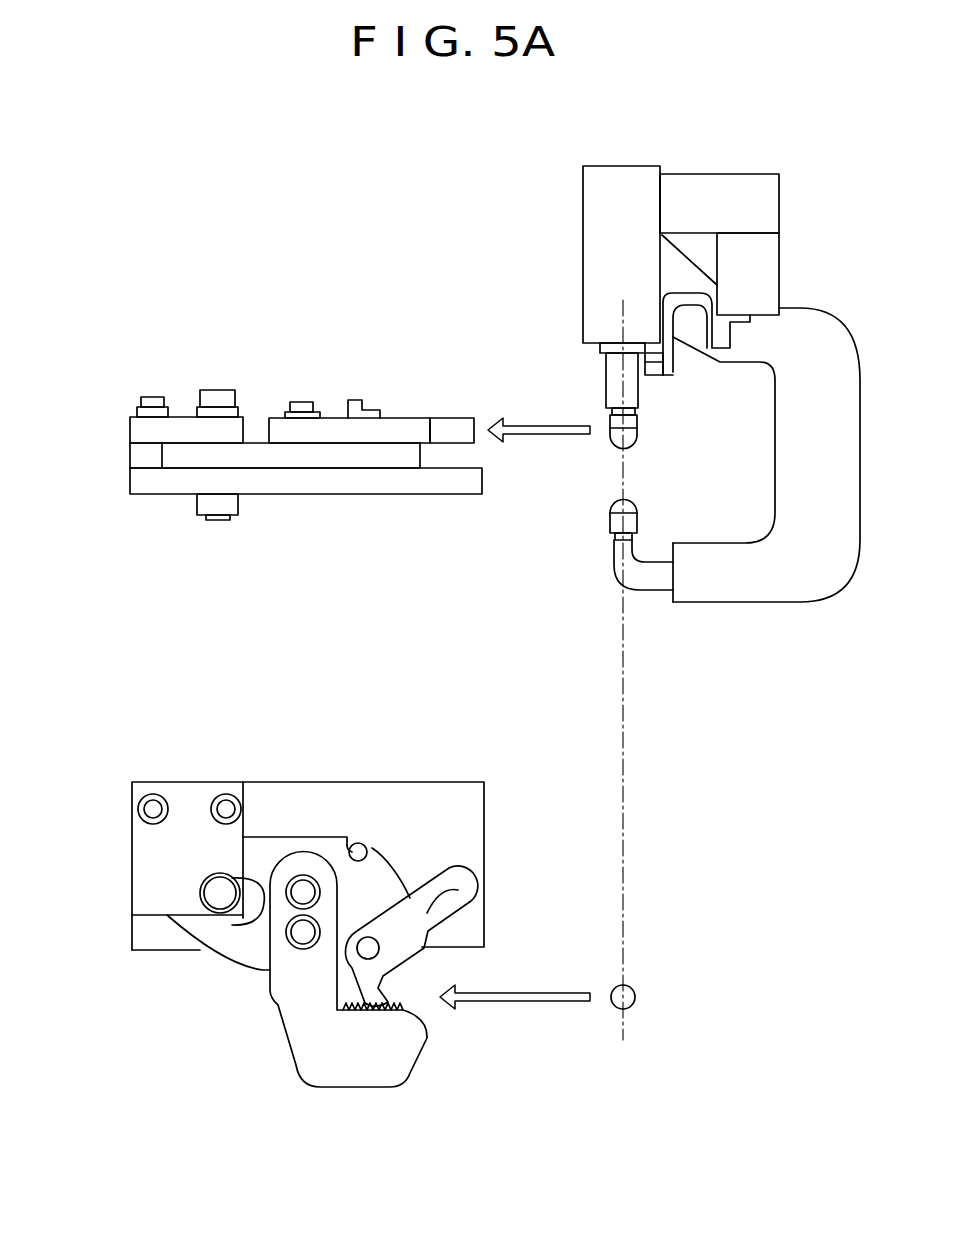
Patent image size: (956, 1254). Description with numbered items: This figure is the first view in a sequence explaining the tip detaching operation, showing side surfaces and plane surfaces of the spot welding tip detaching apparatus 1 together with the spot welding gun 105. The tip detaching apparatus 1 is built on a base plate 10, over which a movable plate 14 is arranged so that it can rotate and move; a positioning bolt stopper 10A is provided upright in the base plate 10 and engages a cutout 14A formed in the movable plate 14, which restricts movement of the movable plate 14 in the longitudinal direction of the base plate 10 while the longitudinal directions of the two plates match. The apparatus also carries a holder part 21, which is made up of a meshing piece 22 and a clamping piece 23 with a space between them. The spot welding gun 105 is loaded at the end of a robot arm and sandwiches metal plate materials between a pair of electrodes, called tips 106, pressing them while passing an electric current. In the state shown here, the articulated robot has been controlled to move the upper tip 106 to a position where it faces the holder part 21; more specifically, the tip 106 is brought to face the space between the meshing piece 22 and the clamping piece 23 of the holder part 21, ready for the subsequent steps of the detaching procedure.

The spot welding tip detaching apparatus 1 is at (290, 352).
The base plate 10 is at (138, 479).
The positioning bolt stopper 10A is at (363, 408).
The movable plate 14 is at (275, 651).
The cutout 14A is at (353, 842).
The holder part 21 is at (478, 405).
The meshing piece 22 is at (322, 435).
The clamping piece 23 is at (443, 427).
The spot welding gun 105 is at (820, 325).
The tip 106 is at (640, 428).